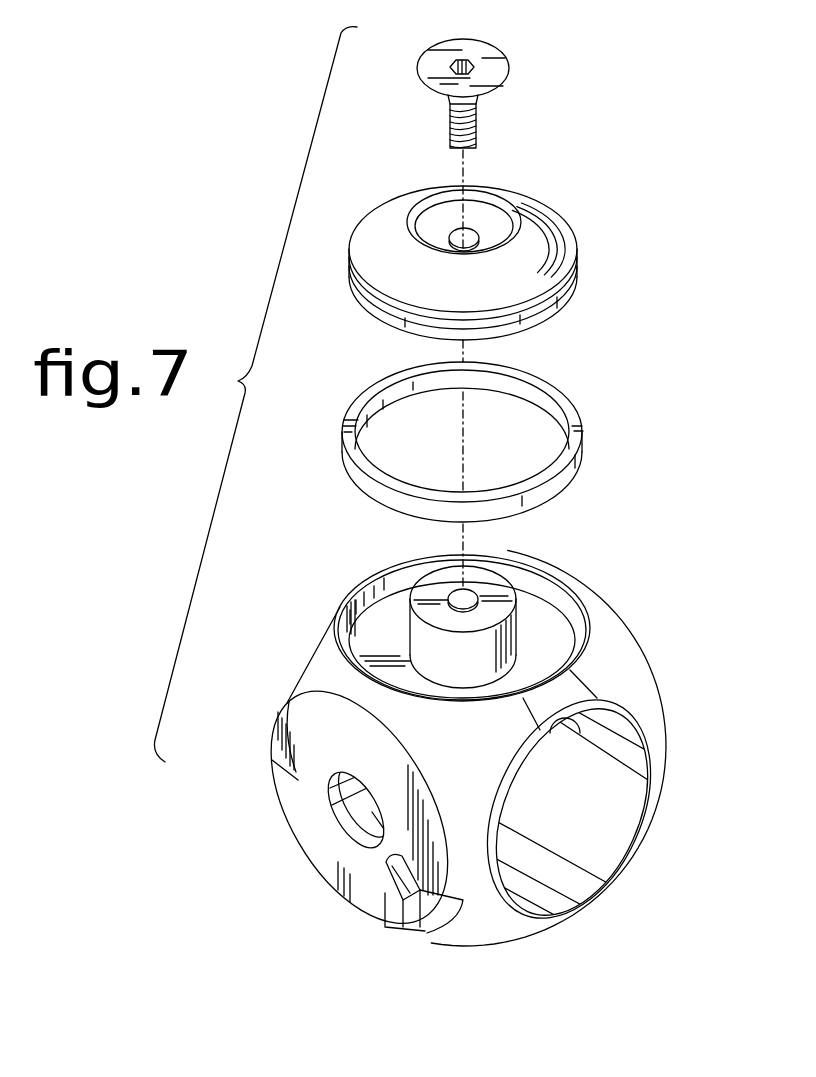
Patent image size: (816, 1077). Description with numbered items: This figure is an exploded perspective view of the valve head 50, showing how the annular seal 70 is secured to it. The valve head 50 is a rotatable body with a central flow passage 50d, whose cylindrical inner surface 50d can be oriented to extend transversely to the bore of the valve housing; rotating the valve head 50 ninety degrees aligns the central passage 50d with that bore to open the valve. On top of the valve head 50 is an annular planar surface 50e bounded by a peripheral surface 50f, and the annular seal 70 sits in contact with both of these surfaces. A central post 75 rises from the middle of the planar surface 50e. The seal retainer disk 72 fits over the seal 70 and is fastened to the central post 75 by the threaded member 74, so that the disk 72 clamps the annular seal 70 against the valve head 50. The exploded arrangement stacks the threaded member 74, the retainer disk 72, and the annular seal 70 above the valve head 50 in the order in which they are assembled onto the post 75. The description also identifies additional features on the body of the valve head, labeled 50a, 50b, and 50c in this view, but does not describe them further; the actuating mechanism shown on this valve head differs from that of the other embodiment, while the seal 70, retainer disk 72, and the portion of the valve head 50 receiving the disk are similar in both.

The valve head 50 is at (322, 668).
The side hole 50a is at (345, 815).
The flat side face 50b is at (327, 866).
The slot 50c is at (431, 922).
The central flow passage 50d is at (613, 828).
The annular planar surface 50e is at (373, 632).
The peripheral surface 50f is at (400, 583).
The annular seal 70 is at (565, 398).
The seal retainer disk 72 is at (543, 232).
The threaded member 74 is at (488, 52).
The central post 75 is at (497, 585).